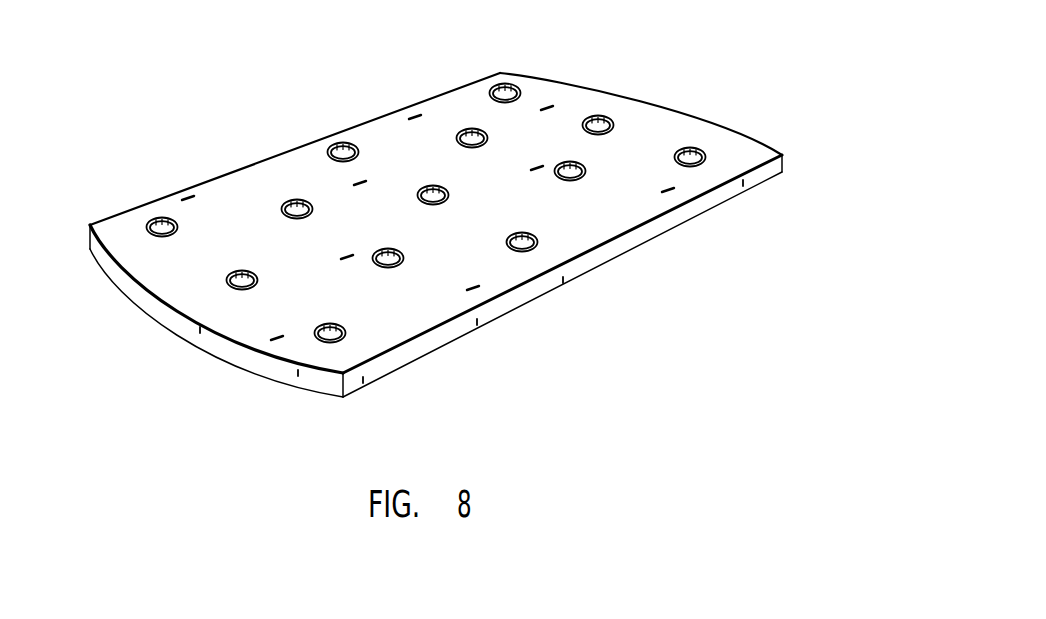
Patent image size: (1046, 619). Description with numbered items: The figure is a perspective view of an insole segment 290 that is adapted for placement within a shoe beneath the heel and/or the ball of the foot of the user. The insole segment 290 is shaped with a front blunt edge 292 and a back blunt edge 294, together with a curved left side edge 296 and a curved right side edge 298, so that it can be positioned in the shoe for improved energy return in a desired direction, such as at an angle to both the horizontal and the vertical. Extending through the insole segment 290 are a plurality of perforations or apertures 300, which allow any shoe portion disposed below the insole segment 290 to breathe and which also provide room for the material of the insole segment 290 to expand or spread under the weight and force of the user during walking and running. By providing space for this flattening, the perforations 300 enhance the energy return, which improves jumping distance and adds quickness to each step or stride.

The insole segment 290 is at (641, 93).
The front blunt edge 292 is at (238, 169).
The back blunt edge 294 is at (450, 337).
The curved left side edge 296 is at (178, 318).
The curved right side edge 298 is at (697, 118).
The perforations or apertures 300 is at (155, 217).